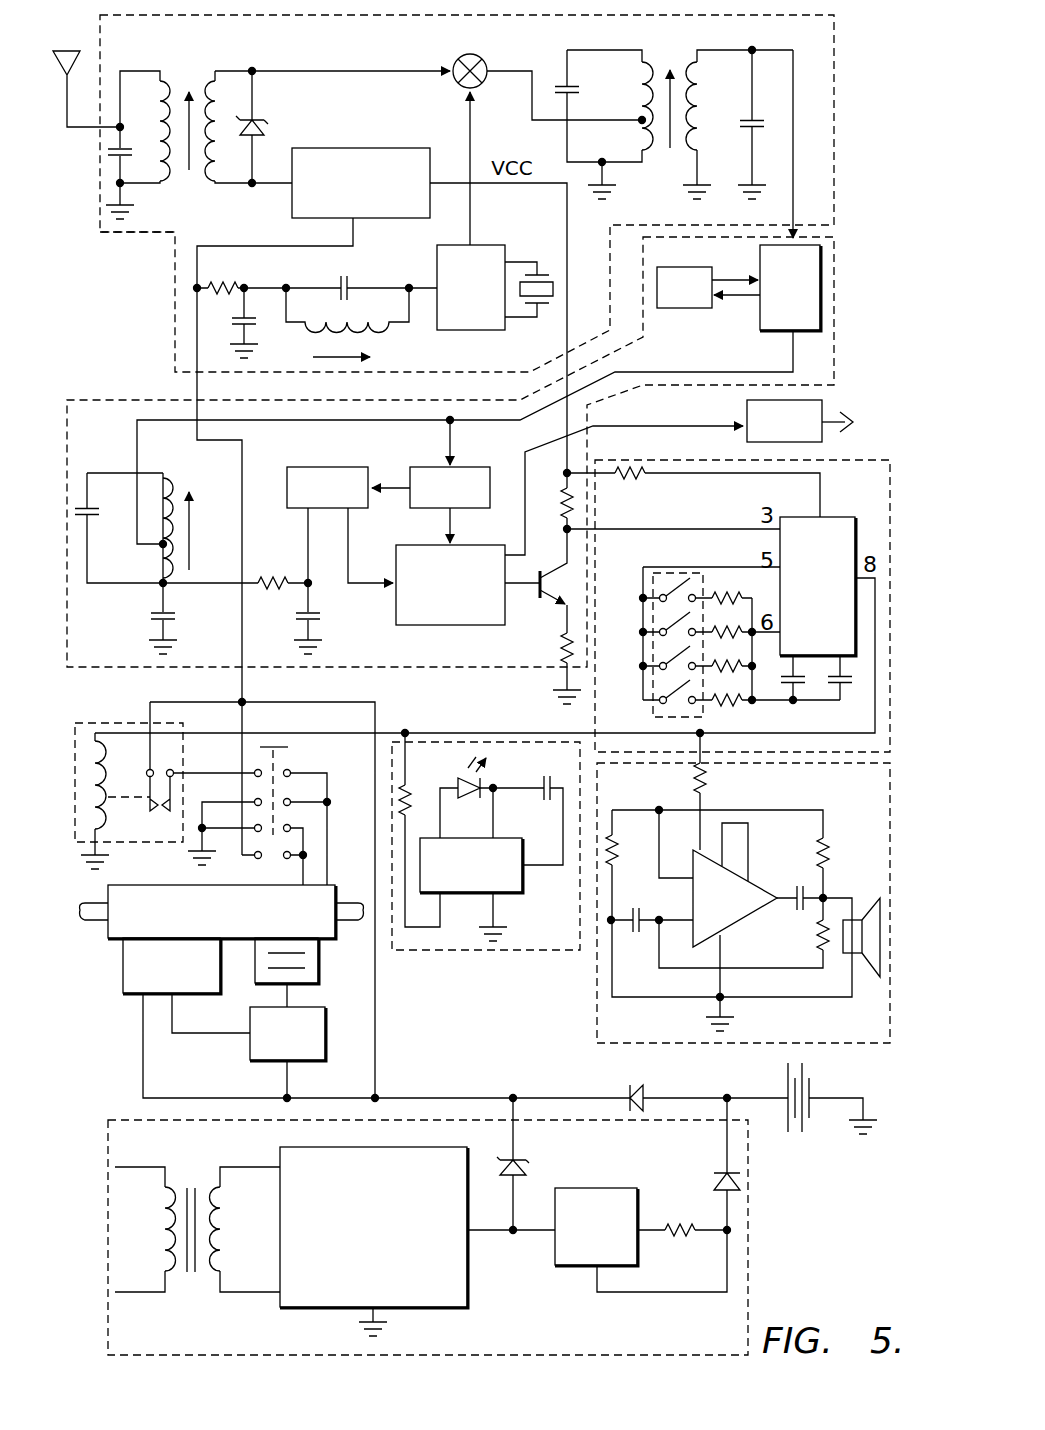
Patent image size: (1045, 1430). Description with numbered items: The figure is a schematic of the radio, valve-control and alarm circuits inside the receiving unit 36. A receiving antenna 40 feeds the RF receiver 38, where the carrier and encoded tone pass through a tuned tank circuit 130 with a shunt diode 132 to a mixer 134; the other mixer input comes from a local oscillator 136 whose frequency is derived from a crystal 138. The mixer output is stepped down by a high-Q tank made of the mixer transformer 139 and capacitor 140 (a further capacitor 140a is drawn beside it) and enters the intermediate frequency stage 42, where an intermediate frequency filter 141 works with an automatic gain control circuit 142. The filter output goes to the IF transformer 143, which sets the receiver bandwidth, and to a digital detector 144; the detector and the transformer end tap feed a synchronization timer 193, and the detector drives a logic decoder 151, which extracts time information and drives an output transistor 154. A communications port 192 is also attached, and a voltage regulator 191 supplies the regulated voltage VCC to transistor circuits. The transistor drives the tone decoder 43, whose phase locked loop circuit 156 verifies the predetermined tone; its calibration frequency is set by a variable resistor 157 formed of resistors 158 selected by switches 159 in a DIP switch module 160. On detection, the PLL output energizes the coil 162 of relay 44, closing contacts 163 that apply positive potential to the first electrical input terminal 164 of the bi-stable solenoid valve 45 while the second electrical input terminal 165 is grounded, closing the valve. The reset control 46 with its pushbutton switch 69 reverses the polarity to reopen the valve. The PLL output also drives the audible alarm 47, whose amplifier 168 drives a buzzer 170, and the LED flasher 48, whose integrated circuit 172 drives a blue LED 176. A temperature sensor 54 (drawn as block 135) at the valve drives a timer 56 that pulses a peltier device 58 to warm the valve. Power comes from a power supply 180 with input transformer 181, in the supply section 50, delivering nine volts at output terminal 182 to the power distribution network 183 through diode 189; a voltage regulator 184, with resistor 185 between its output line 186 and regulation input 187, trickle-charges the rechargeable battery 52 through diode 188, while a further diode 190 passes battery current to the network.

The receiving unit 36 is at (150, 315).
The RF receiver 38 is at (155, 233).
The receiving antenna 40 is at (67, 100).
The tuned tank circuit 130 is at (170, 82).
The shunt diode 132 is at (266, 127).
The mixer 134 is at (458, 59).
The local oscillator 136 is at (437, 275).
The crystal 138 is at (556, 275).
The mixer transformer 139 is at (555, 50).
The capacitor 140 is at (640, 62).
The capacitor 140a is at (740, 130).
The intermediate frequency filter 141 is at (760, 318).
The automatic gain control circuit 142 is at (690, 308).
The voltage regulator 191 is at (340, 148).
The communications port 192 is at (747, 415).
The intermediate frequency stage 42 is at (663, 238).
The IF transformer 143 is at (165, 482).
The digital detector 144 is at (432, 467).
The synchronization timer 193 is at (313, 467).
The logic decoder 151 is at (440, 628).
The output transistor 154 is at (548, 600).
The tone decoder 43 is at (595, 722).
The phase locked loop circuit 156 is at (800, 517).
The variable resistor 157 is at (637, 666).
The resistors 158 is at (725, 594).
The switches 159 is at (674, 629).
The DIP switch module 160 is at (640, 718).
The relay 44 is at (137, 723).
The coil 162 is at (114, 828).
The contacts 163 is at (172, 792).
The reset control 46 is at (309, 799).
The reset pushbutton switch 69 is at (277, 748).
The first electrical input terminal 164 is at (328, 882).
The second electrical input terminal 165 is at (303, 886).
The solenoid valve 45 is at (110, 938).
The valve driver block 135 is at (172, 966).
The temperature sensor 54 is at (130, 996).
The peltier device 58 is at (318, 980).
The timer 56 is at (270, 1062).
The power distribution network 183 is at (377, 1072).
The LED flasher 48 is at (527, 952).
The integrated circuit 172 is at (522, 885).
The blue LED 176 is at (486, 776).
The audible alarm 47 is at (597, 1015).
The amplifier 168 is at (738, 927).
The buzzer 170 is at (865, 918).
The power supply section 50 is at (748, 1250).
The input transformer 181 is at (181, 1190).
The power supply 180 is at (432, 1308).
The output terminal 182 is at (477, 1233).
The voltage regulator 184 is at (570, 1265).
The resistor 185 is at (668, 1234).
The output line 186 is at (645, 1226).
The regulation input 187 is at (597, 1286).
The diode 188 is at (723, 1171).
The diode 189 is at (520, 1160).
The diode 190 is at (632, 1086).
The rechargeable battery 52 is at (786, 1084).